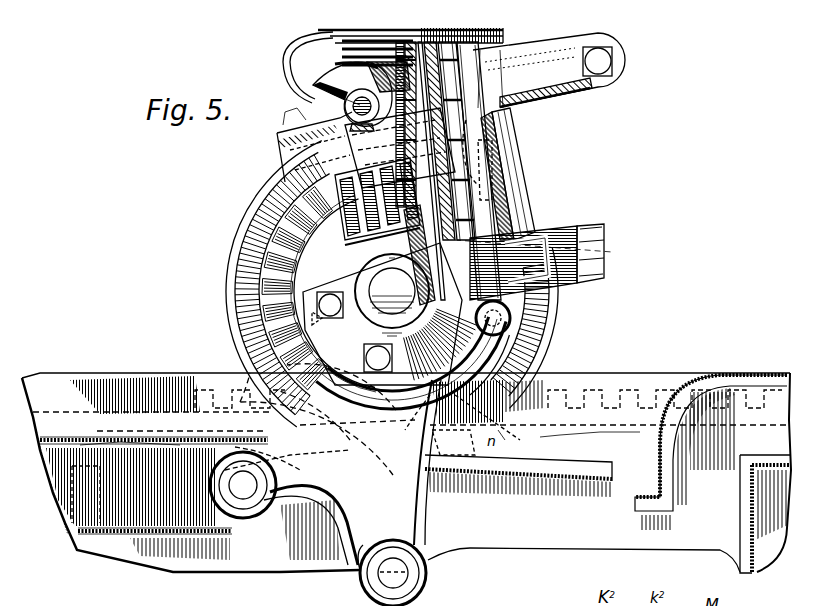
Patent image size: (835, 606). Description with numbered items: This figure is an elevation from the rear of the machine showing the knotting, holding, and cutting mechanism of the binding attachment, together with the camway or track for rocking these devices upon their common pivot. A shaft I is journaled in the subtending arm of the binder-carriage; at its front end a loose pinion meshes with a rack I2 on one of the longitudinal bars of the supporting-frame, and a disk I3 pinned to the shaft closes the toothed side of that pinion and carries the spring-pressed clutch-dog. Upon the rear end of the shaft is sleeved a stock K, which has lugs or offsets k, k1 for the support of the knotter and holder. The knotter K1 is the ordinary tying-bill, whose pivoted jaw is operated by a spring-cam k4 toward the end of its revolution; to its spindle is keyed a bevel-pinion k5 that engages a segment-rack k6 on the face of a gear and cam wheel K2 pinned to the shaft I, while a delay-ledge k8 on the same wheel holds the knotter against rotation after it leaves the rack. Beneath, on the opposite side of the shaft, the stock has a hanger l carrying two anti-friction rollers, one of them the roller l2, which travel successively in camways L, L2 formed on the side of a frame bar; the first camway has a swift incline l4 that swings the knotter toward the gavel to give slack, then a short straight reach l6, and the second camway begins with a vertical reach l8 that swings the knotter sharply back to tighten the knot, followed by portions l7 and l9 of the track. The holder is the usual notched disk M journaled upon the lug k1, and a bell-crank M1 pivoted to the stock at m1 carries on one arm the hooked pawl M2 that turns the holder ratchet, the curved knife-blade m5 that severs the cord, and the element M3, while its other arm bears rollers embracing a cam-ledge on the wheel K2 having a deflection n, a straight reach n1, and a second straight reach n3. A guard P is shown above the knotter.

The camway L is at (62, 500).
The frame portion L2 is at (630, 472).
The rack I2 is at (622, 392).
The disk I3 is at (130, 484).
The hanger l is at (320, 419).
The anti-friction roller l2 is at (425, 578).
The swift incline l4 is at (248, 520).
The short straight reach l6 is at (480, 425).
The rib l7 is at (530, 462).
The vertical reach l8 is at (711, 452).
The bracket l9 is at (765, 503).
The deflection n is at (532, 352).
The straight reach n1 is at (542, 303).
The second straight reach n3 is at (256, 222).
The stock K is at (382, 314).
The knotter K1 is at (335, 62).
The gear and cam wheel K2 is at (236, 266).
The lug k is at (276, 157).
The lug k1 is at (318, 96).
The spring-cam k4 is at (372, 52).
The bevel-pinion k5 is at (332, 168).
The segment-rack k6 is at (272, 300).
The delay-ledge k8 is at (540, 328).
The shaft I is at (392, 295).
The notched disk M is at (549, 70).
The bell-crank M1 is at (483, 188).
The hooked pawl M2 is at (502, 145).
The plunger M3 is at (432, 230).
The pivot m1 is at (533, 262).
The curved knife-blade m5 is at (410, 104).
The guard bracket P is at (295, 67).